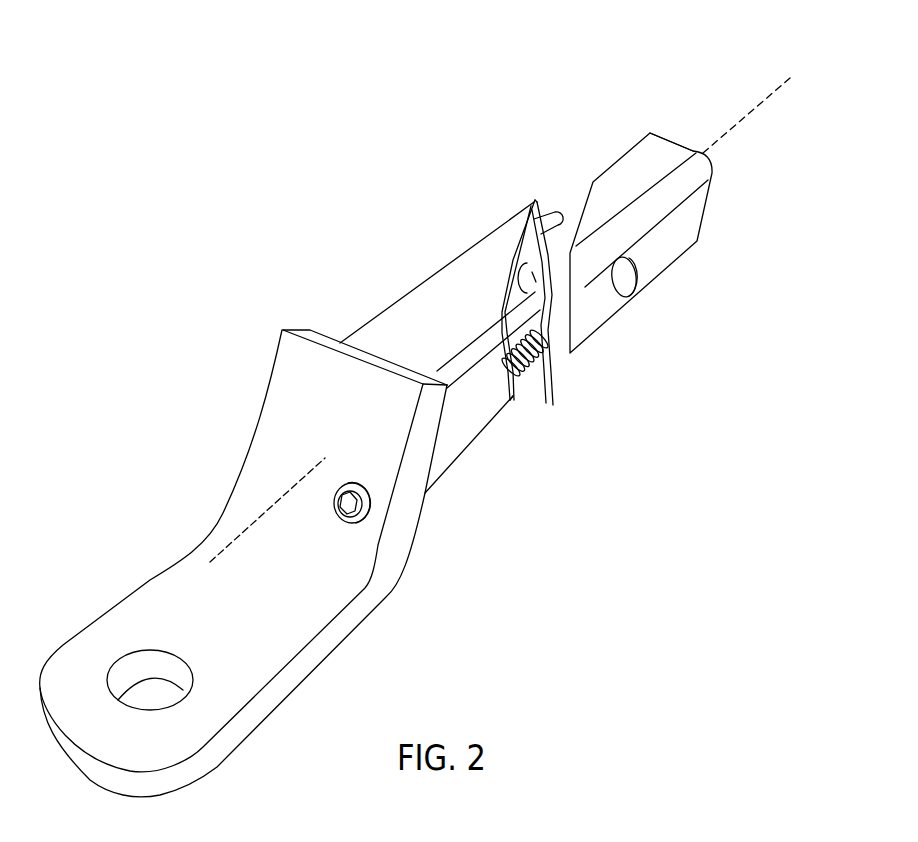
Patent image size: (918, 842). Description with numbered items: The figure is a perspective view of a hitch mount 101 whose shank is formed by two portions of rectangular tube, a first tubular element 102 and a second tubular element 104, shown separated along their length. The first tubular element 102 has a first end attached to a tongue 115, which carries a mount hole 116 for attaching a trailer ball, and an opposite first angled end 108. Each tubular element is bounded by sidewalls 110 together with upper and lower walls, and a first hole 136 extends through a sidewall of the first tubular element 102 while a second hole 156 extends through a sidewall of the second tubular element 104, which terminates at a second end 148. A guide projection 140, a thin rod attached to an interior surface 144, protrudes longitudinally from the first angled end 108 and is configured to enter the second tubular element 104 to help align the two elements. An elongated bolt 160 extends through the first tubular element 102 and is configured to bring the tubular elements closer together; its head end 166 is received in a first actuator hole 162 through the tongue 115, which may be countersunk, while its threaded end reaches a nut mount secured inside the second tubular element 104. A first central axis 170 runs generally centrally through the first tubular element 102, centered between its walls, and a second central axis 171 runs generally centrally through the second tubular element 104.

The hitch mount 101 is at (160, 133).
The first tubular element 102 is at (399, 258).
The second tubular element 104 is at (585, 164).
The first angled end 108 is at (546, 327).
The sidewalls 110 is at (465, 432).
The tongue 115 is at (280, 378).
The mount hole 116 is at (135, 663).
The first hole 136 is at (523, 252).
The guide projection 140 is at (543, 217).
The interior surface 144 is at (532, 272).
The second end 148 is at (674, 135).
The second hole 156 is at (633, 287).
The elongated bolt 160 is at (348, 484).
The first actuator hole 162 is at (335, 504).
The head end 166 is at (333, 497).
The first central axis 170 is at (238, 535).
The second central axis 171 is at (778, 87).